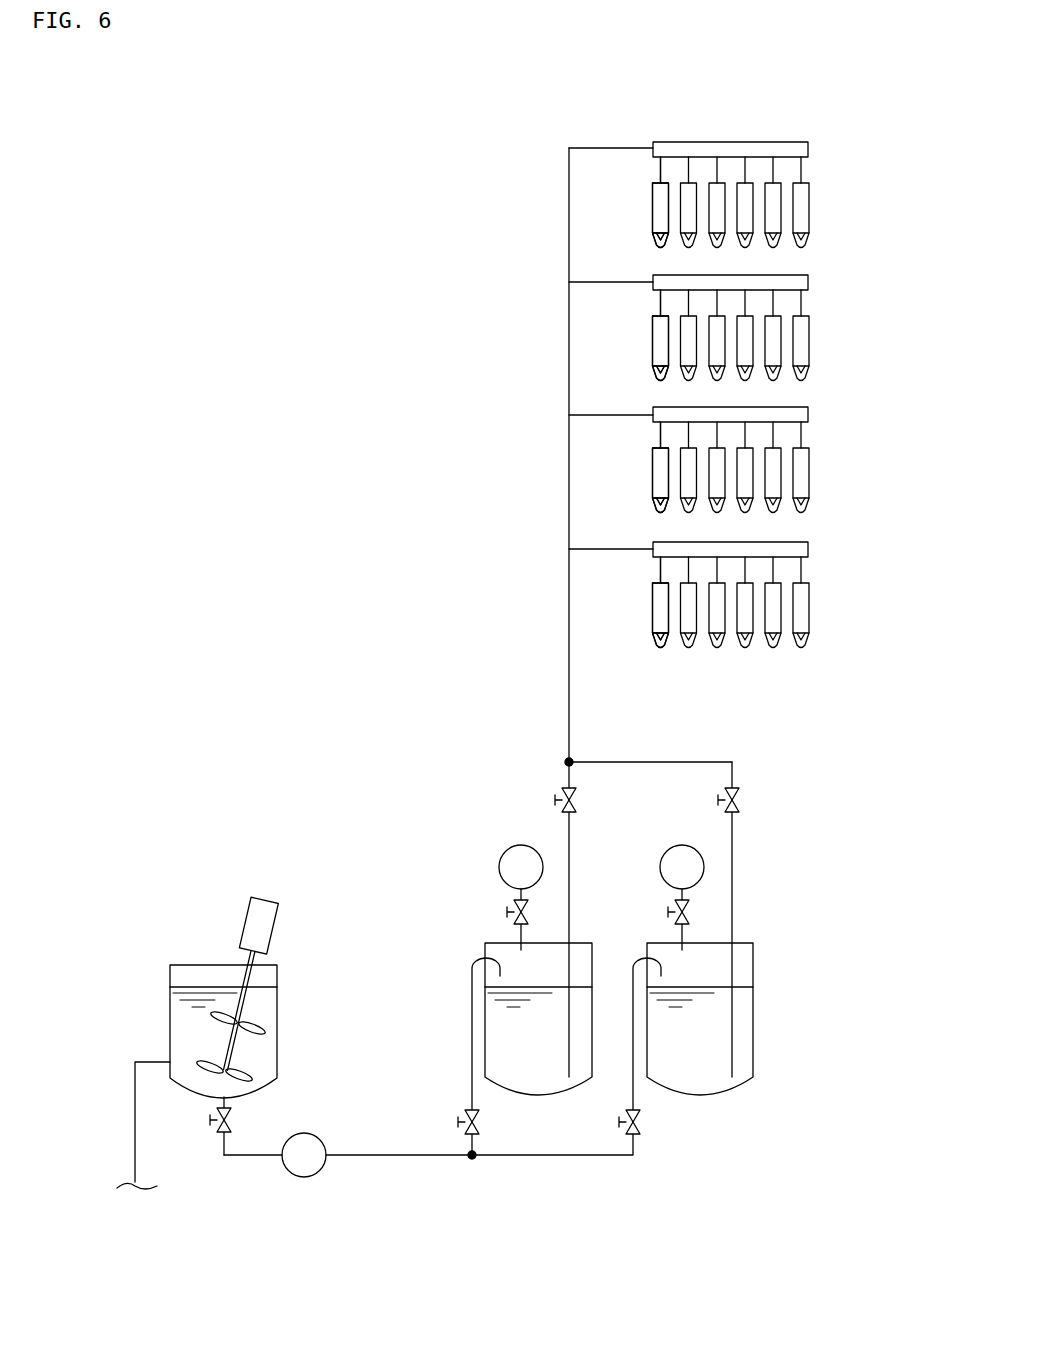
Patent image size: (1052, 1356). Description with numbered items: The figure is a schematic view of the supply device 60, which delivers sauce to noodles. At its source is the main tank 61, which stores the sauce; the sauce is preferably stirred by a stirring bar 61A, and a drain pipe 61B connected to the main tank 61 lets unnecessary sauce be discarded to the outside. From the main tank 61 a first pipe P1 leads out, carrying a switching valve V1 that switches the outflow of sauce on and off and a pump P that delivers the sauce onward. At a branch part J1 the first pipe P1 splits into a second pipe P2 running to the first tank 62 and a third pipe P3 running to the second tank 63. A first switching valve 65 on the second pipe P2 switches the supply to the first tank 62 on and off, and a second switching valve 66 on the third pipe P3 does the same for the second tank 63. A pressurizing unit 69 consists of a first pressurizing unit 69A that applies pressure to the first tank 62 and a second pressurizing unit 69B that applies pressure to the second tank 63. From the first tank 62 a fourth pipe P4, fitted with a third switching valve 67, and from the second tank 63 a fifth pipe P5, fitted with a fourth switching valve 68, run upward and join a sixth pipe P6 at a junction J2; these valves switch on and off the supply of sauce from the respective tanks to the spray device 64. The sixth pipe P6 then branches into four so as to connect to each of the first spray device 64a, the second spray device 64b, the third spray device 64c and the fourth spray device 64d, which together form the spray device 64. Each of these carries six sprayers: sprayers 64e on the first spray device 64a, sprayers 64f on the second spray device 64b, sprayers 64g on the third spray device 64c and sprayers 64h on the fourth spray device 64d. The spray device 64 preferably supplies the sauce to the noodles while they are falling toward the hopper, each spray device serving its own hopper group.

The supply device 60 is at (190, 141).
The main tank 61 is at (180, 962).
The stirring bar 61A is at (268, 908).
The drain pipe 61B is at (141, 1060).
The switching valve V1 is at (221, 1135).
The pump P is at (305, 1170).
The first pipe P1 is at (376, 1160).
The branch part J1 is at (472, 1165).
The second pipe P2 is at (470, 1030).
The third pipe P3 is at (562, 1162).
The first switching valve 65 is at (460, 1125).
The second switching valve 66 is at (620, 1125).
The first tank 62 is at (483, 948).
The second tank 63 is at (757, 972).
The fourth pipe P4 is at (572, 912).
The fifth pipe P5 is at (735, 912).
The third switching valve 67 is at (582, 800).
The fourth switching valve 68 is at (745, 800).
The pressurizing unit 69 is at (647, 820).
The first pressurizing unit 69A is at (510, 868).
The second pressurizing unit 69B is at (672, 868).
The junction J2 is at (563, 762).
The sixth pipe P6 is at (567, 685).
The spray device 64 is at (864, 75).
The first spray device 64a is at (806, 138).
The second spray device 64b is at (806, 271).
The third spray device 64c is at (806, 403).
The fourth spray device 64d is at (806, 538).
The sprayer 64e is at (652, 225).
The sprayer 64f is at (652, 350).
The sprayer 64g is at (652, 475).
The sprayer 64h is at (652, 610).